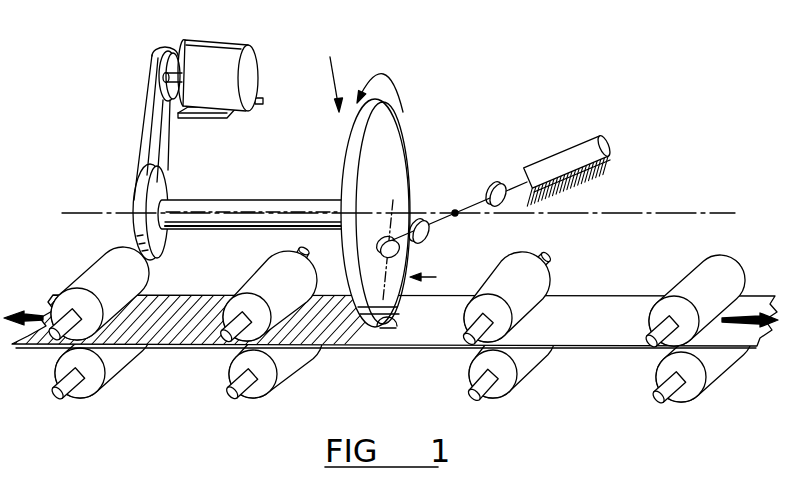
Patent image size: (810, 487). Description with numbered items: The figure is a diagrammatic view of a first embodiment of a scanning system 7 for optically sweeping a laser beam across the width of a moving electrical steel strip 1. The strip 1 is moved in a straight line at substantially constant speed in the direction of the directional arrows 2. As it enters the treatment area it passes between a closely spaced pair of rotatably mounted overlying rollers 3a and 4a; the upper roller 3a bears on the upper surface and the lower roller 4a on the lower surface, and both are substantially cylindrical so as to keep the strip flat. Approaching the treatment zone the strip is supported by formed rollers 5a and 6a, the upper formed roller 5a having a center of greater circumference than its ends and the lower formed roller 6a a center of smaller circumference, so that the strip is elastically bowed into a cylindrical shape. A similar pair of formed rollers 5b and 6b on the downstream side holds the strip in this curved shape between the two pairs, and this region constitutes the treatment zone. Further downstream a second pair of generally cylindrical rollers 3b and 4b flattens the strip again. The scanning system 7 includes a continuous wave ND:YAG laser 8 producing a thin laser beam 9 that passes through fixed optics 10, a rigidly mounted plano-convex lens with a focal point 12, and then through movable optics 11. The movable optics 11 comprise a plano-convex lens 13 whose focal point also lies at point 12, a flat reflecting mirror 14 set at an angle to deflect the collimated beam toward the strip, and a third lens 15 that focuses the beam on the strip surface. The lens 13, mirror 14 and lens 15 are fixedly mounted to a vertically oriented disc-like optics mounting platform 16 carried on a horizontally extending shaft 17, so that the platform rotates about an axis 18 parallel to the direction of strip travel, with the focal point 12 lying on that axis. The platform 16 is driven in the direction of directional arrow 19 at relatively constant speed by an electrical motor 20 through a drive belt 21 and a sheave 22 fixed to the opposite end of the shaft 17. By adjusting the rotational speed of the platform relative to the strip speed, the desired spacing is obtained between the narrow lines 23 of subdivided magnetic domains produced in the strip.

The steel strip 1 is at (597, 356).
The directional arrows 2 is at (23, 313).
The upper roller 3a is at (694, 268).
The cylindrical roller 3b is at (103, 262).
The lower roller 4a is at (716, 378).
The cylindrical roller 4b is at (105, 371).
The upper formed roller 5a is at (524, 238).
The upper formed roller 5b is at (268, 263).
The lower formed roller 6a is at (518, 388).
The lower formed roller 6b is at (265, 391).
The scanning system 7 is at (329, 78).
The laser 8 is at (547, 160).
The laser beam 9 is at (514, 185).
The fixed optics 10 is at (493, 186).
The movable optics 11 is at (439, 276).
The focal point 12 is at (469, 231).
The plano-convex lens 13 is at (421, 220).
The reflecting mirror 14 is at (389, 241).
The third lens 15 is at (380, 321).
The optics mounting platform 16 is at (392, 131).
The shaft 17 is at (290, 199).
The axis 18 is at (257, 210).
The directional arrow 19 is at (387, 73).
The electrical motor 20 is at (256, 46).
The drive belt 21 is at (150, 121).
The sheave 22 is at (157, 192).
The narrow lines 23 is at (392, 328).